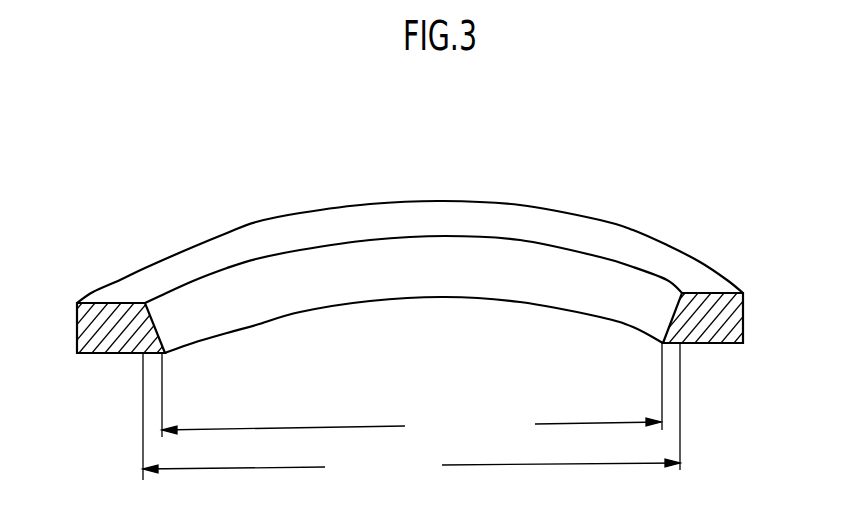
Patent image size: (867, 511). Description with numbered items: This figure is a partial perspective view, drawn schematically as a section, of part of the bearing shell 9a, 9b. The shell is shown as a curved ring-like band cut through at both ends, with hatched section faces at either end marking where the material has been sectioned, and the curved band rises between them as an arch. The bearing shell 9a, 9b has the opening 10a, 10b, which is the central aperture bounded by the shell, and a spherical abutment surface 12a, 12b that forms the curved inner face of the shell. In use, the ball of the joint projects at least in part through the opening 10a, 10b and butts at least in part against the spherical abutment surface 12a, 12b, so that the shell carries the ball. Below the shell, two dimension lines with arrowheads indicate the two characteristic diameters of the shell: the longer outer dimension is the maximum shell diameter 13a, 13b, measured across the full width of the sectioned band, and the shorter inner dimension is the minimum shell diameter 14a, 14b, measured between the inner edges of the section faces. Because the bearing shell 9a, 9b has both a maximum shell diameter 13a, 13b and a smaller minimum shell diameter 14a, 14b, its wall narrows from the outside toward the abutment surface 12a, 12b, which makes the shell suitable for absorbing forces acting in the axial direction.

The bearing shell 9a is at (410, 214).
The bearing shell 9b is at (522, 217).
The opening 10a is at (408, 246).
The opening 10b is at (478, 367).
The spherical abutment surface 12a is at (408, 248).
The spherical abutment surface 12b is at (265, 283).
The maximum shell diameter 13a is at (411, 413).
The maximum shell diameter 13b is at (411, 413).
The minimum shell diameter 14a is at (412, 393).
The minimum shell diameter 14b is at (412, 393).